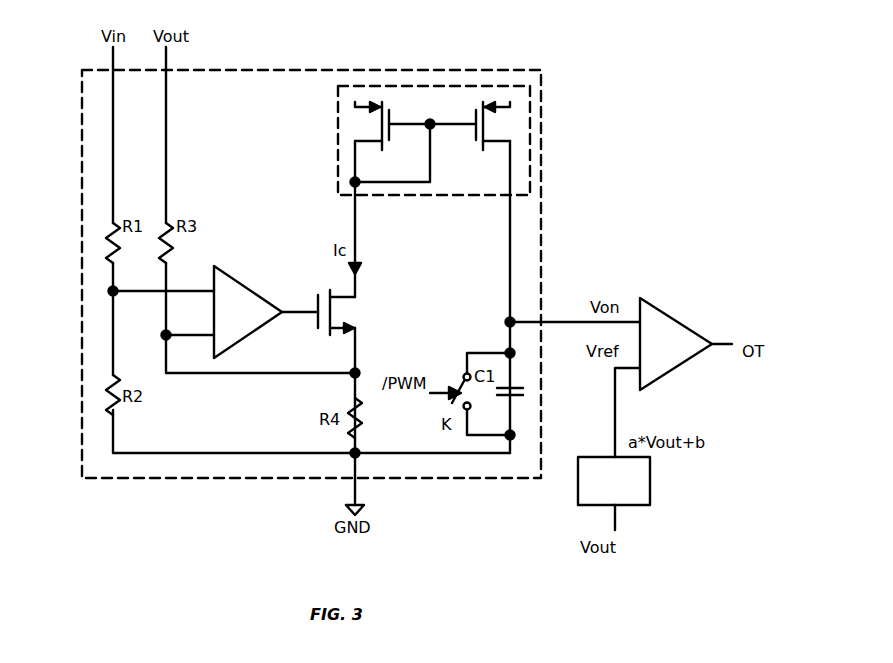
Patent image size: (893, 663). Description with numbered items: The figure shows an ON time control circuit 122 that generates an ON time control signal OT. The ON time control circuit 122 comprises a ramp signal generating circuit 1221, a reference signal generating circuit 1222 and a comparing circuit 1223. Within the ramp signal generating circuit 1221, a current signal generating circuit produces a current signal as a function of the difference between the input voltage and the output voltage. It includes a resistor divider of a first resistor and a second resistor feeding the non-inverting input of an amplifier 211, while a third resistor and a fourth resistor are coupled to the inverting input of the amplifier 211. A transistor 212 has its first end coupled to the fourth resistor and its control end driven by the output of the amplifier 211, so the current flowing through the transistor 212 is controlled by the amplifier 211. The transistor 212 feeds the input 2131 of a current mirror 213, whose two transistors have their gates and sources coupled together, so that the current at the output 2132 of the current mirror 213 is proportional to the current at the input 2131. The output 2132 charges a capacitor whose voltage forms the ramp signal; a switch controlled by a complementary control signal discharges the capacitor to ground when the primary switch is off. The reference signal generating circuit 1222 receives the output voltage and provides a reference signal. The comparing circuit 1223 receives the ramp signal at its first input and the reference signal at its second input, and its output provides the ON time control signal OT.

The ON time control circuit 122 is at (646, 20).
The ramp signal generating circuit 1221 is at (518, 70).
The reference signal generating circuit 1222 is at (614, 481).
The comparing circuit 1223 is at (673, 318).
The amplifier 211 is at (250, 288).
The transistor 212 is at (357, 320).
The current mirror 213 is at (413, 161).
The input of current mirror 2131 is at (355, 195).
The output of current mirror 2132 is at (497, 195).